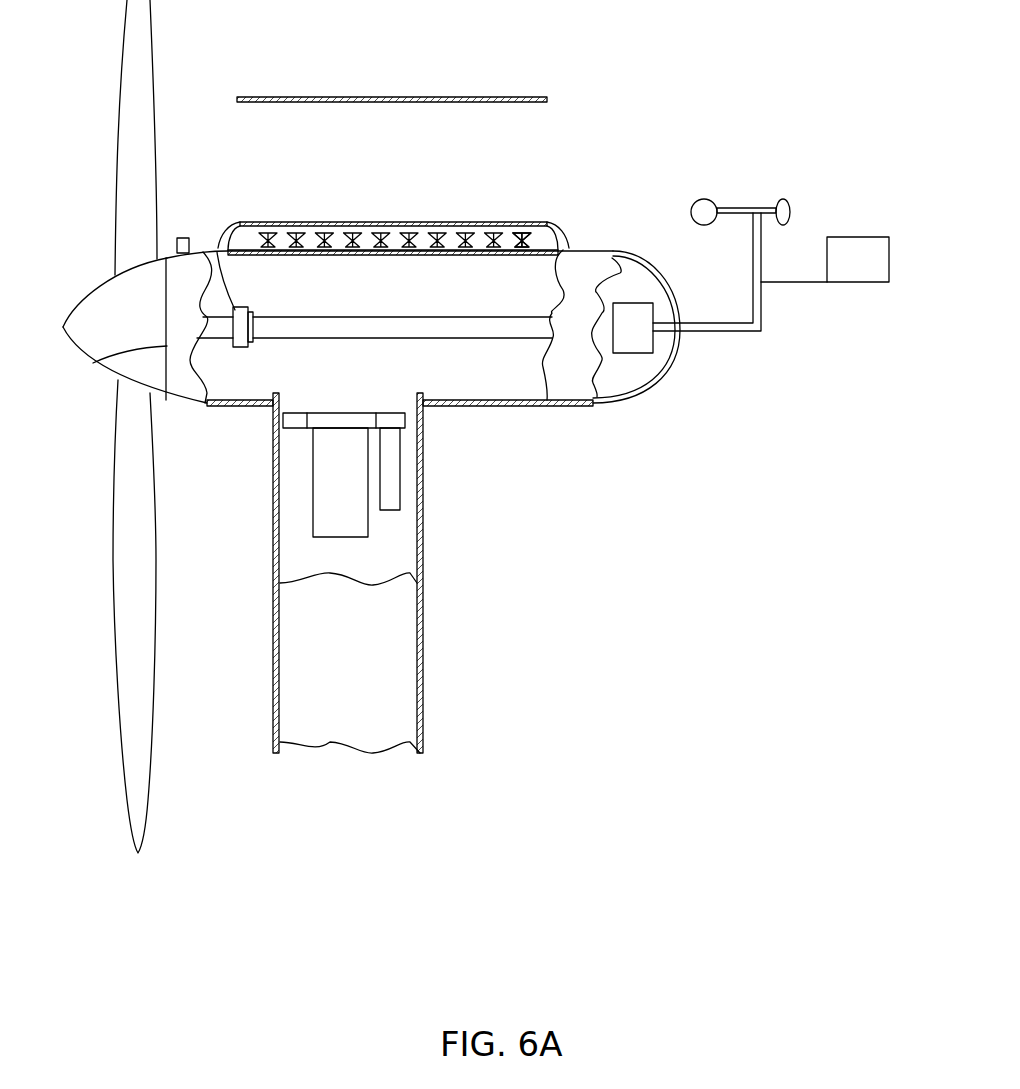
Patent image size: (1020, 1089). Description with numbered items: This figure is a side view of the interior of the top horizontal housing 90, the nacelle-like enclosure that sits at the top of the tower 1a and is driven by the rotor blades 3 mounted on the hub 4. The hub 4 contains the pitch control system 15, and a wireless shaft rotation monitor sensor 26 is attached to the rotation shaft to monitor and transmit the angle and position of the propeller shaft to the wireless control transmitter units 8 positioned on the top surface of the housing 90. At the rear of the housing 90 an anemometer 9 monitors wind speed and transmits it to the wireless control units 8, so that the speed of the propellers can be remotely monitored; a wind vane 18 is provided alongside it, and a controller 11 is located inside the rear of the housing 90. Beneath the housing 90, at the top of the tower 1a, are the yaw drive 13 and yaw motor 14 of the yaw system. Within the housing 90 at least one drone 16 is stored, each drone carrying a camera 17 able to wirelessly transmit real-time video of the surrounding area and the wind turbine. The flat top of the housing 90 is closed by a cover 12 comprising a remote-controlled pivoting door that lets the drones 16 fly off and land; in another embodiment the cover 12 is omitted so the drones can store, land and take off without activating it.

The tower 1a is at (400, 692).
The rotor blade 3 is at (120, 553).
The hub 4 is at (100, 287).
The wireless control transmitter unit 8 is at (183, 238).
The anemometer 9 is at (727, 208).
The controller 11 is at (633, 333).
The cover 12 is at (530, 97).
The yaw drive 13 is at (295, 430).
The yaw motor 14 is at (348, 510).
The pitch control system 15 is at (95, 365).
The drone 16 is at (303, 227).
The camera 17 is at (520, 243).
The wind vane 18 is at (866, 262).
The wireless shaft rotation monitor sensor 26 is at (215, 245).
The top horizontal housing 90 is at (553, 462).